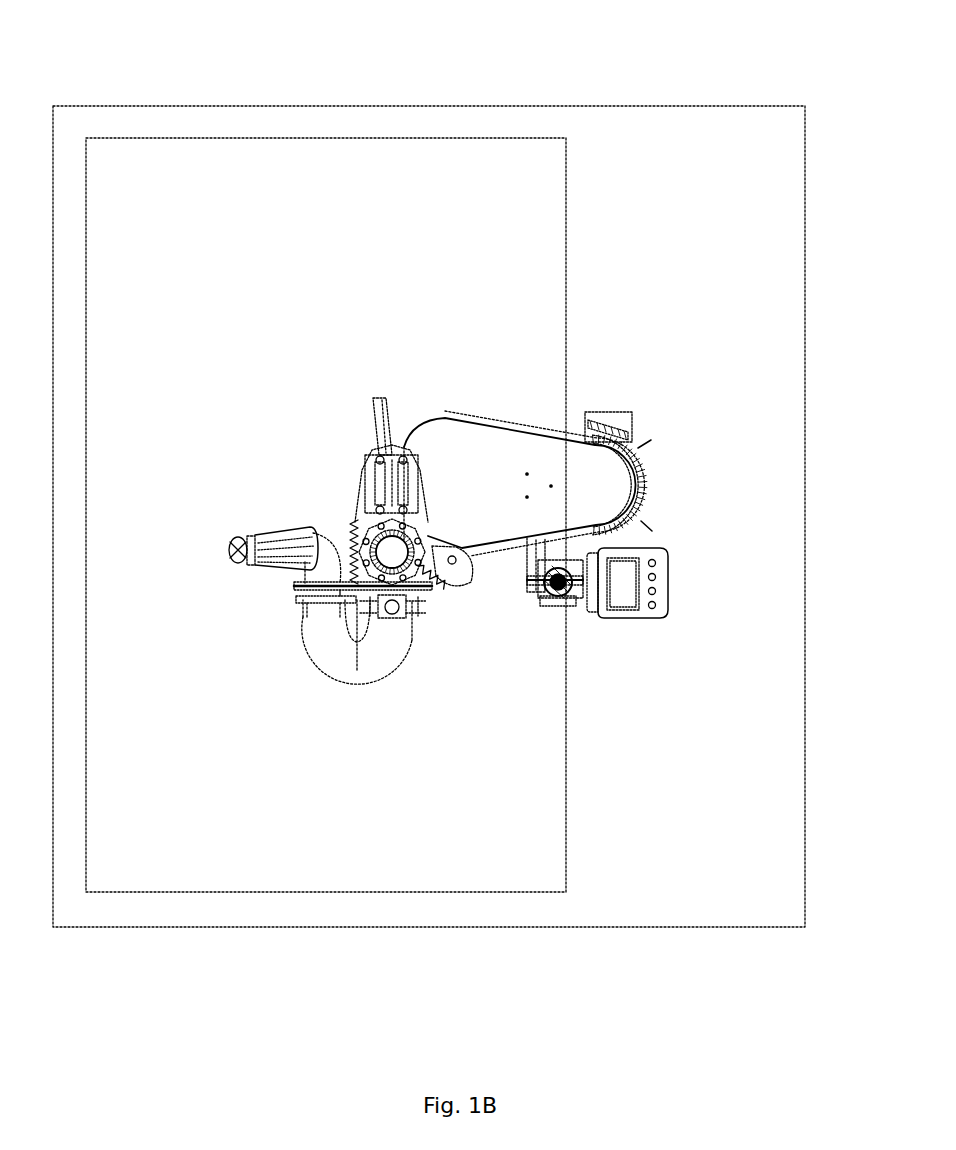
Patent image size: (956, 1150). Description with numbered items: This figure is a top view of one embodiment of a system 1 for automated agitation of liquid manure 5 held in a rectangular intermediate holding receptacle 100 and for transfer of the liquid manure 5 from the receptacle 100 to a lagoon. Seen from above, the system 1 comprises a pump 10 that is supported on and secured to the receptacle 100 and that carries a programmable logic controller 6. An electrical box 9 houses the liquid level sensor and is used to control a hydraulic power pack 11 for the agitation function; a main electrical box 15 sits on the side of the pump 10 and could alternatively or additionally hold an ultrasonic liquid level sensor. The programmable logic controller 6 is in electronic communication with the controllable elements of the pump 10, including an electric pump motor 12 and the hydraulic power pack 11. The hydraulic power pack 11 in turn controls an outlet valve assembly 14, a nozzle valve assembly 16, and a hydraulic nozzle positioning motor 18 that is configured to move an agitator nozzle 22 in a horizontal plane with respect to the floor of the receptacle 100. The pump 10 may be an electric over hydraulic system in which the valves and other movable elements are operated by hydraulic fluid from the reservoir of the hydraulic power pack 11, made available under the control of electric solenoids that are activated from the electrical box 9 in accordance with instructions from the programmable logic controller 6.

The system 1 is at (494, 62).
The rectangular intermediate holding receptacle 100 is at (314, 118).
The liquid manure 5 is at (273, 282).
The pump 10 is at (420, 666).
The outlet valve assembly 14 is at (368, 506).
The agitator nozzle 22 is at (243, 549).
The main electrical box 15 is at (610, 412).
The electric pump motor 12 is at (653, 484).
The hydraulic nozzle positioning motor 18 is at (463, 578).
The nozzle valve assembly 16 is at (404, 609).
The electrical box 9 is at (556, 616).
The hydraulic power pack 11 is at (566, 600).
The programmable logic controller 6 is at (652, 612).